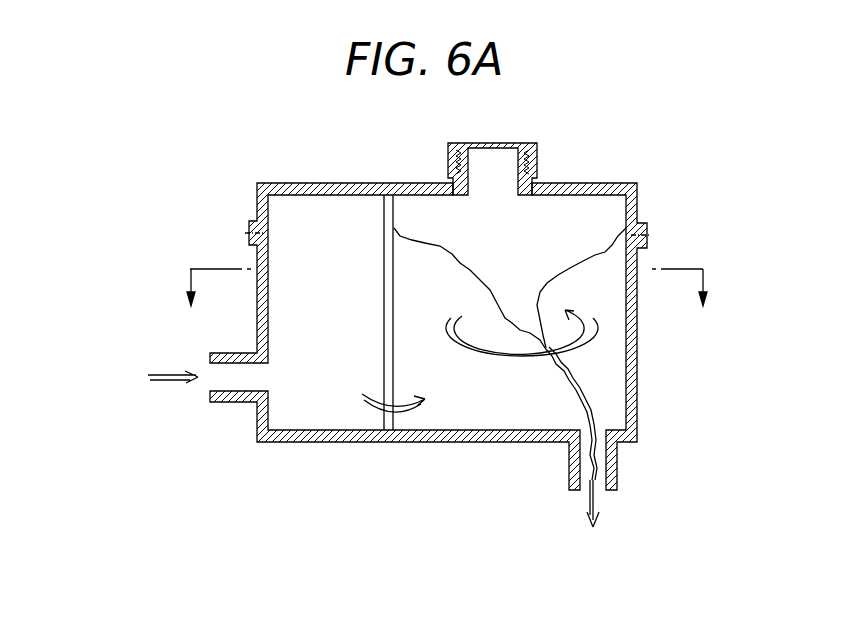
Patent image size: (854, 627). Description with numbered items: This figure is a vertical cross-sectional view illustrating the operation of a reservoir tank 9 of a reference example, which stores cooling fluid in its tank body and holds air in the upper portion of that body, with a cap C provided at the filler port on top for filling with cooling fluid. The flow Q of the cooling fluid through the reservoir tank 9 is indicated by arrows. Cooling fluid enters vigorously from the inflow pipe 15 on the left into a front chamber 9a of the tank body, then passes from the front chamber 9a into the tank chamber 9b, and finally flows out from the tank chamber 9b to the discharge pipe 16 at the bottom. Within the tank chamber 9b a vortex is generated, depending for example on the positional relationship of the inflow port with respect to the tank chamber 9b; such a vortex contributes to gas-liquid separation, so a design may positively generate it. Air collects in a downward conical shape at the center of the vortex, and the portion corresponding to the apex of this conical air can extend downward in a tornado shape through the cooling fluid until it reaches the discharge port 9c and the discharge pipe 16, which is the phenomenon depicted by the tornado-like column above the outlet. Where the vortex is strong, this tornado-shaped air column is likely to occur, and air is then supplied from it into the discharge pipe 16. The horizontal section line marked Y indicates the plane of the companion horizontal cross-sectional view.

The reservoir tank 9 is at (442, 563).
The front chamber 9a is at (318, 214).
The tank chamber 9b is at (579, 218).
The discharge port 9c is at (602, 432).
The inflow pipe 15 is at (228, 421).
The discharge pipe 16 is at (634, 477).
The cap C is at (518, 143).
The flow of the cooling fluid Q is at (170, 366).
The section line Y is at (448, 287).